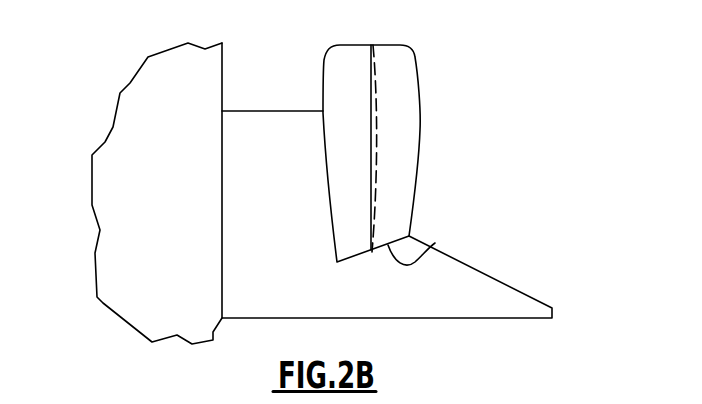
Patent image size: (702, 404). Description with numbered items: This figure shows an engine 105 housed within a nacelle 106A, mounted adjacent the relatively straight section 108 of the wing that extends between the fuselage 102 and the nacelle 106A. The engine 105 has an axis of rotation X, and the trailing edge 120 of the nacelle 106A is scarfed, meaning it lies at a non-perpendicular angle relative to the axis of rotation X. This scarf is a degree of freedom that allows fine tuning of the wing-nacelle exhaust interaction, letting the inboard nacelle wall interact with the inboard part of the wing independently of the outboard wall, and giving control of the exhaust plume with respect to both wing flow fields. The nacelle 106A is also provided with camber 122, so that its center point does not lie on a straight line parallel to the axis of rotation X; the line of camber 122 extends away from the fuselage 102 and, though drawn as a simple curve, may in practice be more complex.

The fuselage 102 is at (112, 146).
The relatively straight section 108 is at (249, 118).
The engine 105 is at (460, 174).
The nacelle 106A is at (418, 135).
The camber 122 is at (376, 76).
The axis of rotation X is at (370, 105).
The trailing edge 120 is at (435, 243).